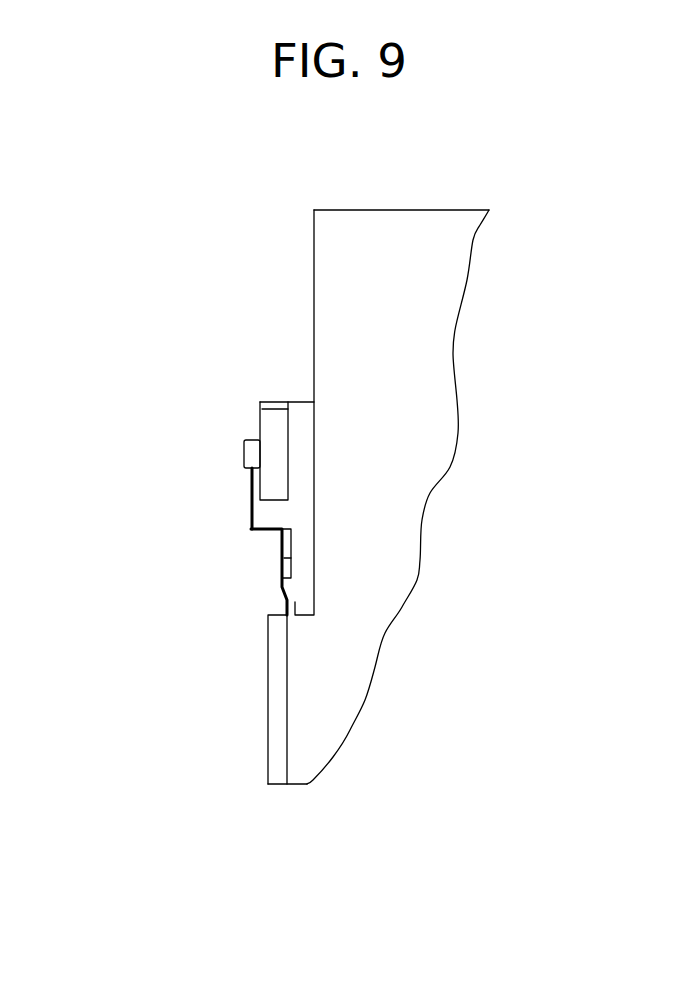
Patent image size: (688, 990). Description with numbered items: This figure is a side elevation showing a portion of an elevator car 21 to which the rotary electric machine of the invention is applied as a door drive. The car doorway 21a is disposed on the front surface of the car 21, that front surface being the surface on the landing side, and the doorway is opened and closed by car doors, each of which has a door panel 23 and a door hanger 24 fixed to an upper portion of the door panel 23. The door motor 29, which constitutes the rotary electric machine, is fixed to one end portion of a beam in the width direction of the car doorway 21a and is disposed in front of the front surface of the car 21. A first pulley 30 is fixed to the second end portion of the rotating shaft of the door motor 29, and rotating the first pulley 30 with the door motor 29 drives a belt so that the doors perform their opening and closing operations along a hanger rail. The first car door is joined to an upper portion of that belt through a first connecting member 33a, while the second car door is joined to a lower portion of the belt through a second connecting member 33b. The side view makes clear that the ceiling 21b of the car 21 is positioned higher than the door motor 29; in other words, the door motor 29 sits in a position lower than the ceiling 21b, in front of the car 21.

The car 21 is at (390, 236).
The car doorway 21a is at (295, 672).
The ceiling 21b is at (357, 208).
The door panel 23 is at (267, 764).
The door hanger 24 is at (280, 590).
The door motor 29 is at (260, 420).
The first pulley 30 is at (245, 458).
The first connecting member 33a is at (252, 507).
The second connecting member 33b is at (269, 572).